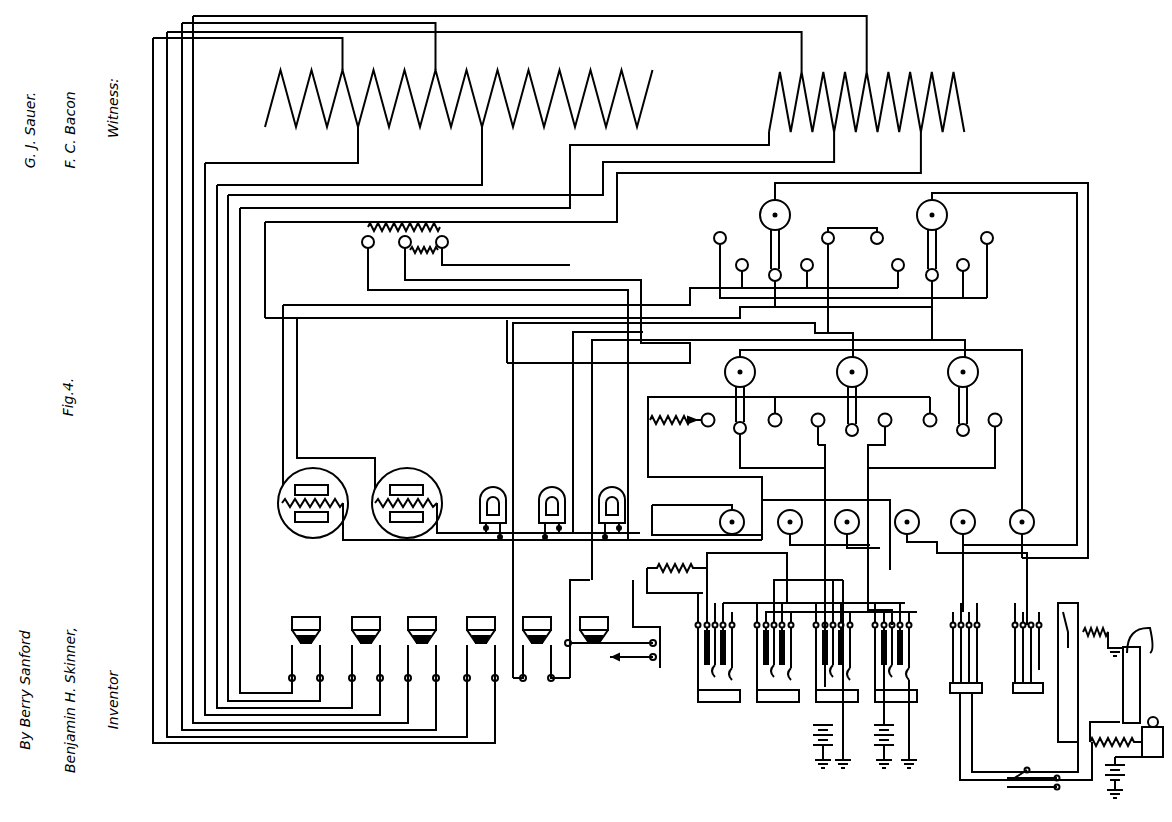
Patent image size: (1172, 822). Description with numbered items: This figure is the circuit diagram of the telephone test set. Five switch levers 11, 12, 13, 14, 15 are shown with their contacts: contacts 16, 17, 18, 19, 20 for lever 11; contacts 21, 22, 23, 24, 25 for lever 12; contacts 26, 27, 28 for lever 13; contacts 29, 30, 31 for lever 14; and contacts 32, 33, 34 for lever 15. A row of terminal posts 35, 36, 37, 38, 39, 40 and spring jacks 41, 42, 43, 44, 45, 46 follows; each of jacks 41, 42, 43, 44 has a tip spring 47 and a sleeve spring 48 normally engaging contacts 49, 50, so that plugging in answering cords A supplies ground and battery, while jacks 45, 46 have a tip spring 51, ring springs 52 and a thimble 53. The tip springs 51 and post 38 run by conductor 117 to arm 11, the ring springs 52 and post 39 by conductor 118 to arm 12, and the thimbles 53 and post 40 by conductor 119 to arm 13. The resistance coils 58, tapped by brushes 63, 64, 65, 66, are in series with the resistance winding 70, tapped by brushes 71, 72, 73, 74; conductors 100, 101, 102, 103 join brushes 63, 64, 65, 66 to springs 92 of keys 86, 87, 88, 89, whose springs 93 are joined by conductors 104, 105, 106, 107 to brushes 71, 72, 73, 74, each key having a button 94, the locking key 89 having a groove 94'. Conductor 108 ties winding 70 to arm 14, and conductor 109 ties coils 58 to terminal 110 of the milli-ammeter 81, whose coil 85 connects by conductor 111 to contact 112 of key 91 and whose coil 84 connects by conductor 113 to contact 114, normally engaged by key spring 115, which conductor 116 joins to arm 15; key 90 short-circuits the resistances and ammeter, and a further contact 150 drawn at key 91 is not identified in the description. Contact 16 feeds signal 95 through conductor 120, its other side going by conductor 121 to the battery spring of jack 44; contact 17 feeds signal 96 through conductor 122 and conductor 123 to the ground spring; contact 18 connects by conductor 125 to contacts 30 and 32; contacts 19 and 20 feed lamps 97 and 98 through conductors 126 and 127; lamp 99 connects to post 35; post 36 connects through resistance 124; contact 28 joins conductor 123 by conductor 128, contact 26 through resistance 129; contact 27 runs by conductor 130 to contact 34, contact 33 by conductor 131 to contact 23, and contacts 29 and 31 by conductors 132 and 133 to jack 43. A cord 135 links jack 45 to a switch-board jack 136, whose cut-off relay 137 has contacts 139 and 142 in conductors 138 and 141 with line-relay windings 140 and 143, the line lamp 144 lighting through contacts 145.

The switch lever 11 is at (780, 242).
The switch lever 12 is at (940, 242).
The switch lever 13 is at (745, 400).
The switch lever 14 is at (858, 402).
The switch lever 15 is at (970, 400).
The contact 16 is at (714, 240).
The contact 17 is at (742, 258).
The contact 18 is at (764, 285).
The contact 19 is at (807, 261).
The contact 20 is at (849, 271).
The contact 21 is at (994, 238).
The contact 22 is at (970, 278).
The contact 23 is at (921, 304).
The contact 24 is at (902, 263).
The contact 25 is at (880, 232).
The contact 26 is at (709, 433).
The contact 27 is at (743, 436).
The contact 28 is at (778, 428).
The contact 29 is at (811, 418).
The contact 30 is at (734, 549).
The contact 31 is at (887, 430).
The contact 32 is at (929, 424).
The contact 33 is at (962, 442).
The contact 34 is at (997, 430).
The terminal post 35 is at (707, 520).
The terminal post 36 is at (800, 525).
The terminal post 37 is at (857, 520).
The binding post 38 is at (917, 520).
The terminal post 39 is at (970, 516).
The binding post 40 is at (1035, 520).
The spring jack 41 is at (705, 652).
The spring jack 42 is at (764, 652).
The spring jack 43 is at (824, 652).
The spring jack 44 is at (905, 678).
The spring jack 45 is at (952, 688).
The spring jack 46 is at (1012, 670).
The tip contact spring 47 is at (722, 678).
The sleeve contact spring 48 is at (700, 680).
The contact 49 is at (700, 628).
The contact 50 is at (716, 640).
The tip spring 51 is at (1040, 622).
The ring springs 52 is at (1018, 634).
The thimble 53 is at (978, 694).
The resistance coils 58 is at (912, 78).
The contact brush 63 is at (923, 148).
The contact brush 64 is at (836, 152).
The contact brush 65 is at (868, 58).
The contact brush 66 is at (804, 58).
The resistance winding 70 is at (620, 78).
The brush 71 is at (484, 146).
The brush 72 is at (360, 146).
The brush 73 is at (438, 50).
The brush 74 is at (345, 50).
The milli-ammeter 81 is at (495, 388).
The ammeter coil 84 is at (444, 230).
The ammeter coil 85 is at (544, 299).
The key 86 is at (306, 649).
The key 87 is at (366, 649).
The key 88 is at (422, 649).
The key 89 is at (481, 649).
The key 90 is at (541, 649).
The key 91 is at (594, 642).
The terminal spring 92 is at (292, 656).
The terminal spring 93 is at (330, 656).
The contact button 94 is at (444, 608).
The locking groove 94' is at (499, 609).
The signal 95 is at (325, 475).
The signal 96 is at (405, 475).
The signal lamp 97 is at (492, 488).
The signal lamp 98 is at (554, 488).
The signal lamp 99 is at (612, 488).
The conductor 100 is at (240, 436).
The conductor 101 is at (228, 458).
The conductor 102 is at (182, 530).
The conductor 103 is at (167, 556).
The conductor 104 is at (217, 360).
The conductor 105 is at (205, 388).
The conductor 106 is at (193, 410).
The conductor 107 is at (153, 476).
The conductor 108 is at (266, 266).
The conductor 109 is at (670, 145).
The ammeter terminal 110 is at (448, 246).
The conductor 111 is at (618, 285).
The contact 112 is at (633, 668).
The conductor 113 is at (565, 290).
The contact 114 is at (620, 608).
The key spring 115 is at (598, 660).
The conductor 116 is at (592, 430).
The conductor 117 is at (1078, 390).
The conductor 118 is at (1088, 352).
The conductor 119 is at (1022, 383).
The conductor 120 is at (445, 308).
The conductor 121 is at (548, 540).
The conductor 122 is at (472, 320).
The conductor 123 is at (458, 530).
The resistance 124 is at (682, 563).
The conductor 125 is at (815, 372).
The conductor 126 is at (512, 428).
The conductor 127 is at (573, 425).
The conductor 128 is at (690, 477).
The resistance 129 is at (672, 425).
The conductor 130 is at (930, 470).
The conductor 131 is at (932, 330).
The conductor 132 is at (826, 484).
The conductor 133 is at (870, 485).
The connecting cord 135 is at (972, 744).
The switch-board jack 136 is at (1028, 768).
The cut-off relay 137 is at (1100, 625).
The conductor 138 is at (1079, 692).
The contacts 139 is at (1073, 646).
The line relay winding 140 is at (1116, 734).
The conductor 141 is at (1107, 722).
The contacts 142 is at (1150, 627).
The line relay winding 143 is at (1148, 727).
The line lamp 144 is at (1156, 710).
The contacts 145 is at (1120, 786).
The contact 150 is at (610, 634).
The answering cords A is at (822, 728).